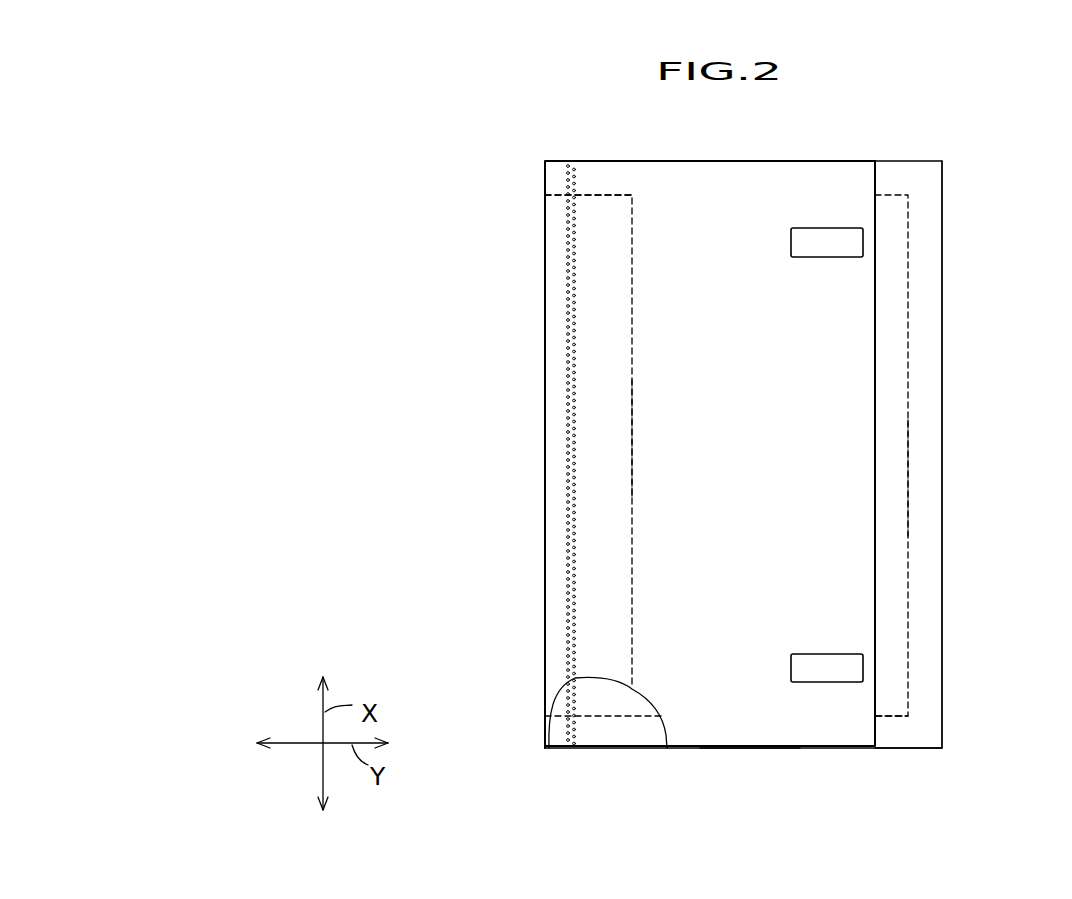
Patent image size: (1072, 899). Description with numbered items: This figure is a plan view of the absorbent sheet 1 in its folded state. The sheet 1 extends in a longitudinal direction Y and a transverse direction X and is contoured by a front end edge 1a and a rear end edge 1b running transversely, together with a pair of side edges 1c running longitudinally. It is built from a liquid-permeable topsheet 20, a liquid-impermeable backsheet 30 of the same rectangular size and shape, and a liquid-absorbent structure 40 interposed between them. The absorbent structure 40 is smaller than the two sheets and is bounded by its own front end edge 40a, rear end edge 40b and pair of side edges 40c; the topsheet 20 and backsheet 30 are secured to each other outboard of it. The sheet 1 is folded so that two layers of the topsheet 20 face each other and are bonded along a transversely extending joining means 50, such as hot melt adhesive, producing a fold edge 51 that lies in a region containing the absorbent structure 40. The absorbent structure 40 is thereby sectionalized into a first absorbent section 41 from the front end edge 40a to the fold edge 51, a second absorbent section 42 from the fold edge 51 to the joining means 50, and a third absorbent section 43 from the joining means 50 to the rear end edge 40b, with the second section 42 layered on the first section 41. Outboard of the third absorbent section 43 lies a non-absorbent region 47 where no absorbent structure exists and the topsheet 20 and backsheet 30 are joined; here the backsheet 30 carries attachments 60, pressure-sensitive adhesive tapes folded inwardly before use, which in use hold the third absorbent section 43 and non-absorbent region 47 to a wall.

The absorbent sheet 1 is at (924, 767).
The front end edge 1a is at (942, 302).
The rear end edge 1b is at (875, 338).
The side edges 1c is at (670, 160).
The topsheet 20 is at (900, 180).
The backsheet 30 is at (741, 176).
The absorbent structure 40 is at (893, 245).
The front end edge of absorbent structure 40a is at (908, 473).
The rear end edge of absorbent structure 40b is at (633, 437).
The side edges of absorbent structure 40c is at (597, 194).
The first absorbent section 41 is at (890, 563).
The second absorbent section 42 is at (556, 510).
The third absorbent section 43 is at (595, 457).
The non-absorbent region 47 is at (850, 395).
The joining means 50 is at (569, 727).
The fold edge 51 is at (544, 588).
The attachments 60 is at (810, 240).